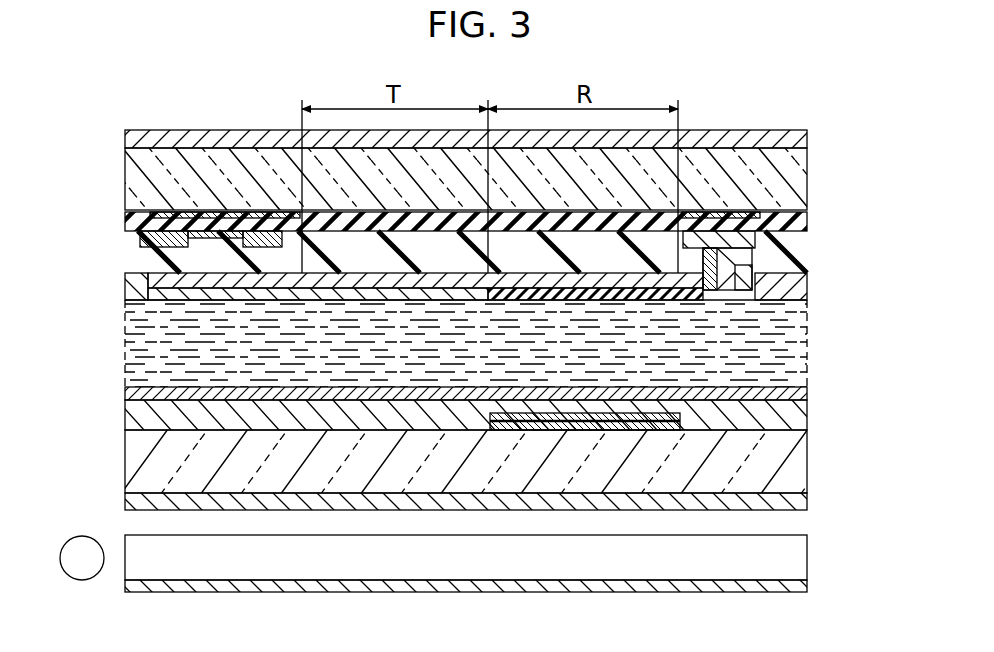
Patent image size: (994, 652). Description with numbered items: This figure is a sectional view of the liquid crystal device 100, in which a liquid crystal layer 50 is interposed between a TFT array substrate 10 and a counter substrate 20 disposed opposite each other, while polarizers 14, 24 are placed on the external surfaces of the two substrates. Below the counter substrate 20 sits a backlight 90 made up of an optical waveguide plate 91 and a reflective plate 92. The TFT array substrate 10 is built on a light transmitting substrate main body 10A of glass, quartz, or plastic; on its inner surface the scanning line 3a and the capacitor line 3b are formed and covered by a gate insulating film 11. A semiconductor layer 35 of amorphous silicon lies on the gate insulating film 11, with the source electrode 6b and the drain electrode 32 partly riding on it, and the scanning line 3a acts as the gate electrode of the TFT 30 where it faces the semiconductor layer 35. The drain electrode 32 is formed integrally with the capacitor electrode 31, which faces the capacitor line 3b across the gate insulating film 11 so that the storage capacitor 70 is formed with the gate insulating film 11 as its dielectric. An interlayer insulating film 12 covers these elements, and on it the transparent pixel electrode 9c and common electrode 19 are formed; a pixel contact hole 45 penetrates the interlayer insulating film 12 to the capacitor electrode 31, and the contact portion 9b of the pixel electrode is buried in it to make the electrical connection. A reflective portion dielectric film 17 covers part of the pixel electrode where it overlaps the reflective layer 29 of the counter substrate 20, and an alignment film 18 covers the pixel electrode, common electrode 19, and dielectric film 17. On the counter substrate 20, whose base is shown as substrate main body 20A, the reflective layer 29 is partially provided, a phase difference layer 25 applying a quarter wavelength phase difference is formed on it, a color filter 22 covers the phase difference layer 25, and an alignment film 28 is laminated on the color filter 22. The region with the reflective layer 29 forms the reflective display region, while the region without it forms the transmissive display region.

The liquid crystal device 100 is at (730, 80).
The TFT array substrate 10 is at (105, 130).
The polarizer 14 is at (807, 141).
The substrate main body 10A is at (807, 163).
The gate insulating film 11 is at (790, 216).
The source electrode 6b is at (153, 214).
The capacitor electrode 31 is at (790, 256).
The scanning line 3a is at (213, 238).
The semiconductor layer 35 is at (200, 228).
The drain electrode 32 is at (263, 238).
The capacitor line 3b is at (757, 242).
The storage capacitor 70 is at (870, 220).
The pixel contact hole 45 is at (741, 265).
The interlayer insulating film 12 is at (790, 284).
The alignment film 18 is at (800, 300).
The reflective portion dielectric film 17 is at (589, 300).
The pixel electrode 9c is at (359, 291).
The contact portion 9b is at (706, 290).
The common electrode 19 is at (204, 291).
The TFT 30 is at (154, 257).
The liquid crystal layer 50 is at (807, 363).
The counter substrate 20 is at (105, 387).
The alignment film 28 is at (807, 396).
The color filter 22 is at (807, 428).
The phase difference layer 25 is at (638, 416).
The reflective layer 29 is at (553, 421).
The substrate body 20A is at (807, 463).
The polarizer 24 is at (807, 502).
The backlight 90 is at (870, 540).
The optical waveguide plate 91 is at (807, 555).
The reflective plate 92 is at (807, 587).